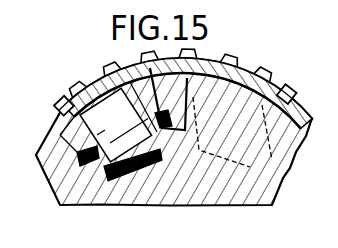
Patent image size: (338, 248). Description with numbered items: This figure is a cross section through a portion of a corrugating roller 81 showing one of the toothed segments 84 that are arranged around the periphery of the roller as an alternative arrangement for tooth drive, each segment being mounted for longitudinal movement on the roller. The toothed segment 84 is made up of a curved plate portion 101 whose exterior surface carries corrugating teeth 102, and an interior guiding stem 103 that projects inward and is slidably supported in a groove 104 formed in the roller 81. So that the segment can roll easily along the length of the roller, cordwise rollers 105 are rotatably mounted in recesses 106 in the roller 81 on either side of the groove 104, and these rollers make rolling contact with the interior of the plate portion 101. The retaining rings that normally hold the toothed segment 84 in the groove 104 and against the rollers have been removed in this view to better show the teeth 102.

The corrugating roller 81 is at (272, 201).
The toothed segment 84 is at (269, 61).
The curved plate portion 101 is at (63, 99).
The corrugating teeth 102 is at (110, 65).
The interior guiding stem 103 is at (198, 55).
The groove 104 is at (173, 124).
The cordwise rollers 105 is at (62, 204).
The recesses 106 is at (137, 178).